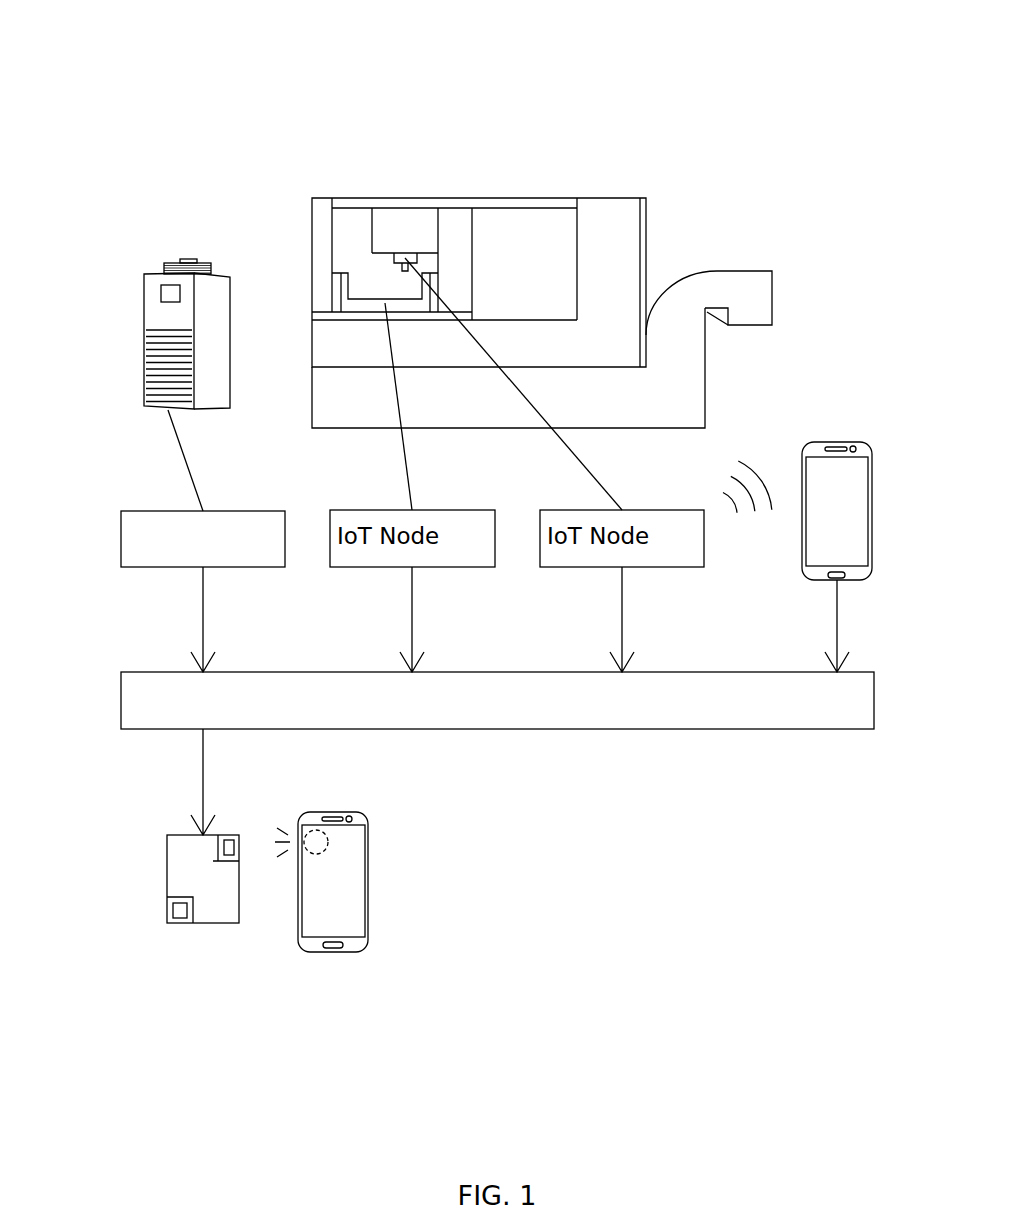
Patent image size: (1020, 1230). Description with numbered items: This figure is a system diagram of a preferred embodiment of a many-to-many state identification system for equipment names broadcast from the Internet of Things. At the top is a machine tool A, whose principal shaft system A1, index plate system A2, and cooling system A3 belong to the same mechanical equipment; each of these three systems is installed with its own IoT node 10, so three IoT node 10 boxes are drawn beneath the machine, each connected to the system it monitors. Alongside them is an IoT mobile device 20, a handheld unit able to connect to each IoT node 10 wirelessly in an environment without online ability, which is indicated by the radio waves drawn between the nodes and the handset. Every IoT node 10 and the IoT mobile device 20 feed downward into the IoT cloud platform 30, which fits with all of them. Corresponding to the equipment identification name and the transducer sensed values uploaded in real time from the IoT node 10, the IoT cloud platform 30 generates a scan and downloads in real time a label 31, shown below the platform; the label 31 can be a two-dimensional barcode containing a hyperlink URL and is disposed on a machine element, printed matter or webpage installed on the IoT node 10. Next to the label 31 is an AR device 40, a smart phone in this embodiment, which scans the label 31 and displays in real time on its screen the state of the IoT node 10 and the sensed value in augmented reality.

The machine tool A is at (183, 65).
The principal shaft system A1 is at (390, 220).
The index plate system A2 is at (345, 272).
The cooling system A3 is at (187, 258).
The IoT node 10 is at (147, 516).
The IoT mobile device 20 is at (838, 440).
The IoT cloud platform 30 is at (779, 729).
The label 31 is at (213, 913).
The AR device 40 is at (368, 857).